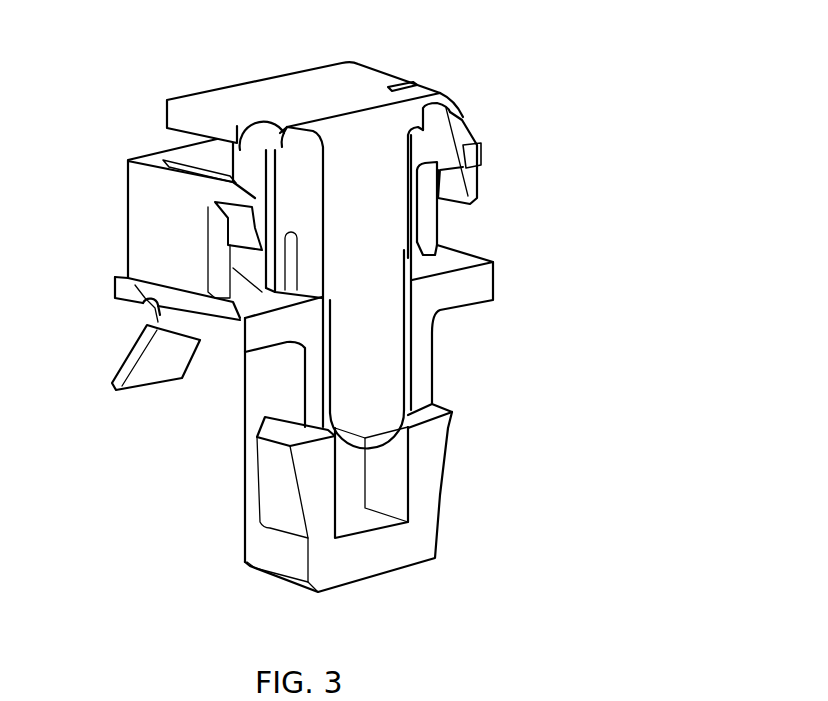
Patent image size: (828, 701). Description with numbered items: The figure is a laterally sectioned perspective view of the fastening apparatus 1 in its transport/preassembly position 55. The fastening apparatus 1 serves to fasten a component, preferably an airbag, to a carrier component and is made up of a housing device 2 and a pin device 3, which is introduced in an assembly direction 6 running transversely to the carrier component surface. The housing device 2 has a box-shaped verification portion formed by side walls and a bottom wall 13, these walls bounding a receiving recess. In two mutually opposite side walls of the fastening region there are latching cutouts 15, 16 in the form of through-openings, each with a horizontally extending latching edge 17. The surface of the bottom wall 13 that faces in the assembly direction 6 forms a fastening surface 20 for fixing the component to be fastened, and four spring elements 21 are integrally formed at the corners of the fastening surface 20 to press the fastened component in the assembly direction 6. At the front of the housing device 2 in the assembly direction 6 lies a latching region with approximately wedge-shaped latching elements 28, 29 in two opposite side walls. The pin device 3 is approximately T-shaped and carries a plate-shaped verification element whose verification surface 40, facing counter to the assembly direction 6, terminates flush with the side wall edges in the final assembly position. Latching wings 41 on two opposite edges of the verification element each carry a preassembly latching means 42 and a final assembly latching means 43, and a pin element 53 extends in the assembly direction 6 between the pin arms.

The fastening apparatus 1 is at (446, 40).
The housing device 2 is at (140, 208).
The pin device 3 is at (373, 224).
The assembly direction 6 is at (352, 658).
The bottom wall 13 is at (258, 278).
The latching cutout 15 is at (453, 223).
The latching cutout 16 is at (157, 313).
The latching edge 17 is at (127, 185).
The fastening surface 20 is at (240, 357).
The spring element 21 is at (118, 368).
The latching element 28 is at (437, 437).
The latching element 29 is at (275, 477).
The verification surface 40 is at (311, 99).
The latching wing 41 is at (257, 137).
The preassembly latching means 42 is at (168, 145).
The final assembly latching means 43 is at (215, 207).
The pin element 53 is at (380, 395).
The transport/preassembly position 55 is at (638, 56).